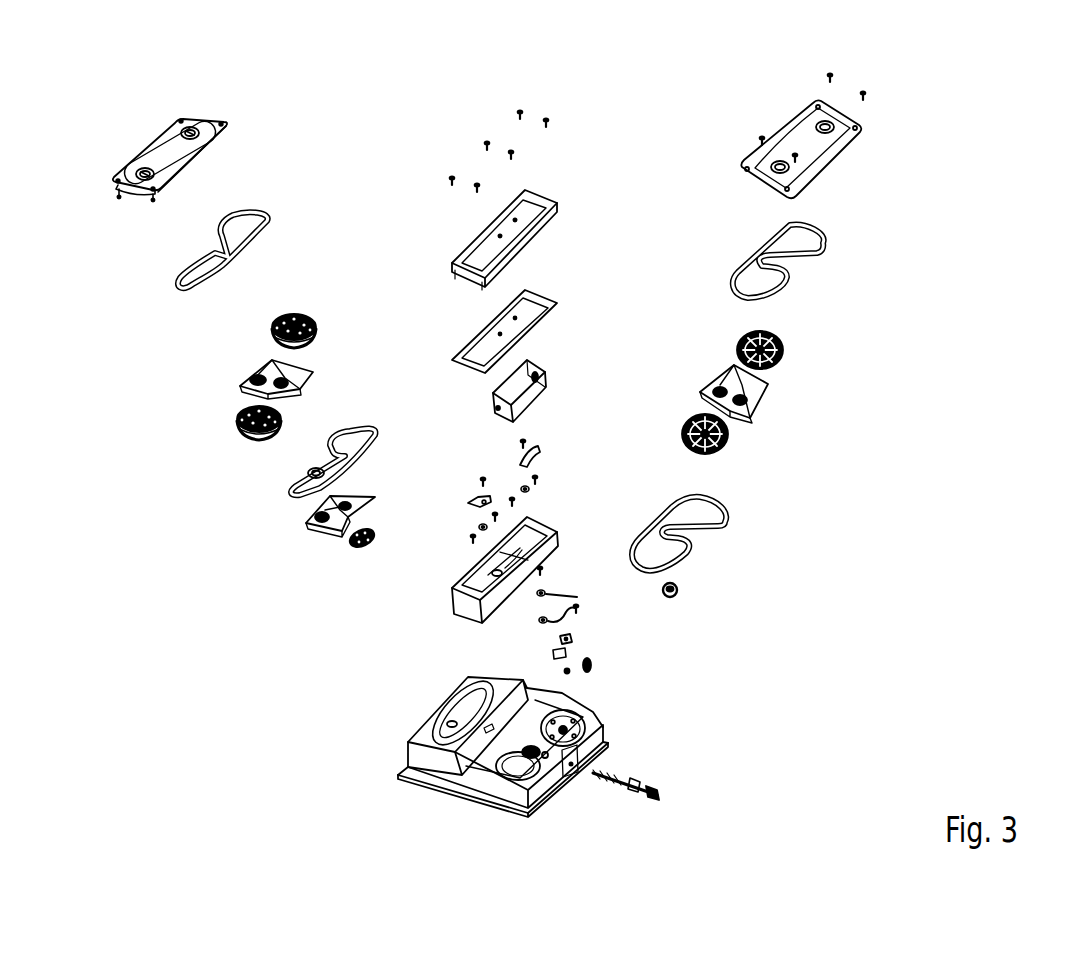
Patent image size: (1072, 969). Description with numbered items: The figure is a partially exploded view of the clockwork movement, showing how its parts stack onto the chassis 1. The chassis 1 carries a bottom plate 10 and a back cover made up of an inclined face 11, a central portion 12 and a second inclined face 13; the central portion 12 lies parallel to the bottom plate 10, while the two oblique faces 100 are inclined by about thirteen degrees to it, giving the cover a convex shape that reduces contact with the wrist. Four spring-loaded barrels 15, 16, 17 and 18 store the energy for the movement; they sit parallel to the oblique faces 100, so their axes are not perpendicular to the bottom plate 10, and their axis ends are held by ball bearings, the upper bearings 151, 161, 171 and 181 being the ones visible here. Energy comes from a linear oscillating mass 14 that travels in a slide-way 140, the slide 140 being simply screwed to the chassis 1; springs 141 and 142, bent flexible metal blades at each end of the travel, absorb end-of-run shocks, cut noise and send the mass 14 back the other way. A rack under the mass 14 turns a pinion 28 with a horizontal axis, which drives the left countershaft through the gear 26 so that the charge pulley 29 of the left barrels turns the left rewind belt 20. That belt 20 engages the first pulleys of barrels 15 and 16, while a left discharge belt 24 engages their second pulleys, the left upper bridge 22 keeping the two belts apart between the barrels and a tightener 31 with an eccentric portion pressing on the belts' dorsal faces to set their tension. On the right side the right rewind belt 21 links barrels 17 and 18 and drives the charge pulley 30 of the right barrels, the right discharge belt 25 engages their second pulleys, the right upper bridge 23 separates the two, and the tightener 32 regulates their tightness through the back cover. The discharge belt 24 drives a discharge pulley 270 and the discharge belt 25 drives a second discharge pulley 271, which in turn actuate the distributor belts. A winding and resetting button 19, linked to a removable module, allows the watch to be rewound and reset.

The chassis 1 is at (367, 793).
The bottom plate 10 is at (538, 750).
The inclined face of the back cover 11 is at (177, 131).
The central portion of the back cover 12 is at (548, 198).
The inclined face of the back cover 13 is at (843, 141).
The linear oscillating mass 14 is at (530, 370).
The barrel 15 is at (310, 317).
The barrel 16 is at (233, 417).
The barrel 17 is at (783, 350).
The barrel 18 is at (728, 443).
The winding and resetting button 19 is at (635, 778).
The left rewind belt 20 is at (266, 218).
The right rewind belt 21 is at (826, 245).
The left upper bridge 22 is at (266, 351).
The right upper bridge 23 is at (768, 388).
The left discharge belt 24 is at (292, 480).
The right discharge belt 25 is at (727, 523).
The gear 26 is at (347, 547).
The pinion 28 is at (566, 653).
The charge pulley of the left barrels 29 is at (256, 376).
The charge pulley of the right barrels 30 is at (748, 408).
The tightener 31 is at (274, 374).
The tightener 32 is at (716, 387).
The oblique faces 100 is at (478, 677).
The slide-way 140 is at (452, 601).
The spring 141 is at (468, 503).
The spring 142 is at (541, 449).
The upper bearing 151 is at (191, 129).
The upper bearing 161 is at (142, 171).
The upper bearing 171 is at (833, 125).
The upper bearing 181 is at (788, 170).
The discharge pulley 270 is at (309, 473).
The second discharge pulley 271 is at (677, 594).